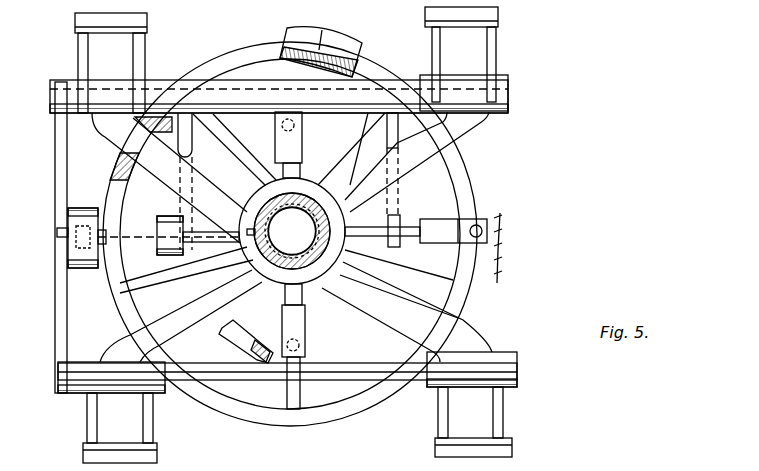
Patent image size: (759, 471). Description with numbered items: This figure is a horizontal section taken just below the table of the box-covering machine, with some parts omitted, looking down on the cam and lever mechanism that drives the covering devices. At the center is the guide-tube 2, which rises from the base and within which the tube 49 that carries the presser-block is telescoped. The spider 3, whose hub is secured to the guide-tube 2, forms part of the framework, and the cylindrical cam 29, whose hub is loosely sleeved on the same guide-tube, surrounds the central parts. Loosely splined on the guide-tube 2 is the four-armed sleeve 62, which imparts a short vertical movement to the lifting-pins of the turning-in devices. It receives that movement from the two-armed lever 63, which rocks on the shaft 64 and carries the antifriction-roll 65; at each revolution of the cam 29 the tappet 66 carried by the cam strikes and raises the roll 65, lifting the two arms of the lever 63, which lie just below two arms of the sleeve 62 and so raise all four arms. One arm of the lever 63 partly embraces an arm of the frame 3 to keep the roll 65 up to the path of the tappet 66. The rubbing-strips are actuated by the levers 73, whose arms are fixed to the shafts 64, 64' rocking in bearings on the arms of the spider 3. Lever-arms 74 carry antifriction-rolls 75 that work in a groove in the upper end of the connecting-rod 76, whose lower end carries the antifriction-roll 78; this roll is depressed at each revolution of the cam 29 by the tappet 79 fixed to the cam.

The guide-tube 2 is at (322, 213).
The spider 3 is at (482, 121).
The cam 29 is at (470, 190).
The tube 49 is at (270, 240).
The four-armed sleeve 62 is at (212, 222).
The two-armed lever 63 is at (238, 113).
The shaft 64 is at (307, 94).
The shaft 64' is at (310, 372).
The antifriction-roll 65 is at (165, 217).
The tappet 66 is at (223, 333).
The levers 73 is at (147, 47).
The lever-arms 74 is at (55, 166).
The antifriction-rolls 75 is at (75, 208).
The connecting-rod 76 is at (82, 220).
The antifriction-roll 78 is at (104, 247).
The tappet 79 is at (310, 28).